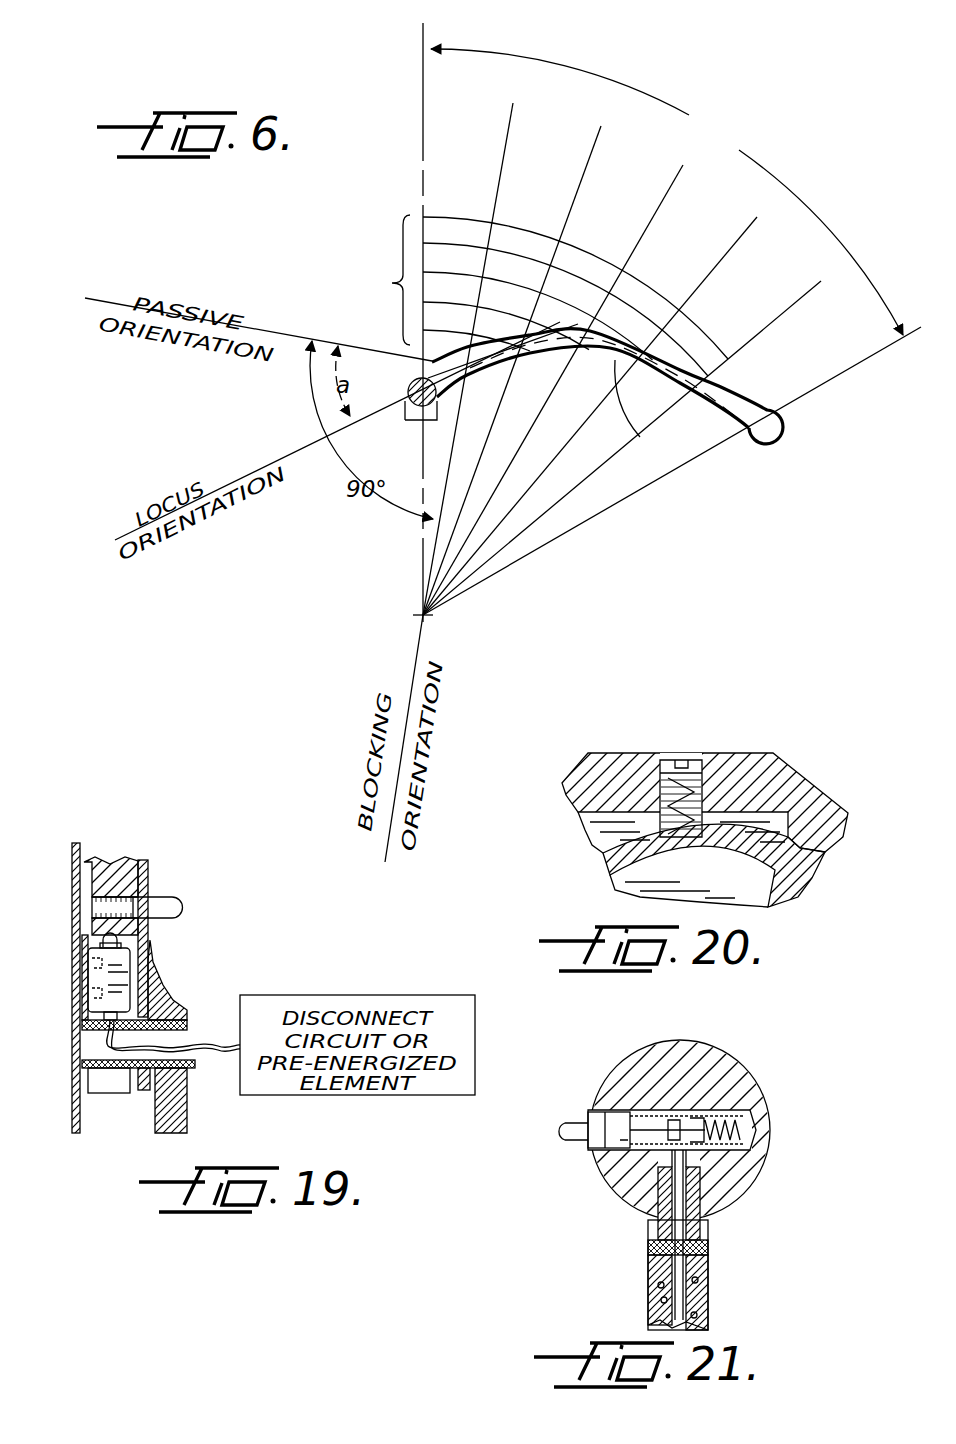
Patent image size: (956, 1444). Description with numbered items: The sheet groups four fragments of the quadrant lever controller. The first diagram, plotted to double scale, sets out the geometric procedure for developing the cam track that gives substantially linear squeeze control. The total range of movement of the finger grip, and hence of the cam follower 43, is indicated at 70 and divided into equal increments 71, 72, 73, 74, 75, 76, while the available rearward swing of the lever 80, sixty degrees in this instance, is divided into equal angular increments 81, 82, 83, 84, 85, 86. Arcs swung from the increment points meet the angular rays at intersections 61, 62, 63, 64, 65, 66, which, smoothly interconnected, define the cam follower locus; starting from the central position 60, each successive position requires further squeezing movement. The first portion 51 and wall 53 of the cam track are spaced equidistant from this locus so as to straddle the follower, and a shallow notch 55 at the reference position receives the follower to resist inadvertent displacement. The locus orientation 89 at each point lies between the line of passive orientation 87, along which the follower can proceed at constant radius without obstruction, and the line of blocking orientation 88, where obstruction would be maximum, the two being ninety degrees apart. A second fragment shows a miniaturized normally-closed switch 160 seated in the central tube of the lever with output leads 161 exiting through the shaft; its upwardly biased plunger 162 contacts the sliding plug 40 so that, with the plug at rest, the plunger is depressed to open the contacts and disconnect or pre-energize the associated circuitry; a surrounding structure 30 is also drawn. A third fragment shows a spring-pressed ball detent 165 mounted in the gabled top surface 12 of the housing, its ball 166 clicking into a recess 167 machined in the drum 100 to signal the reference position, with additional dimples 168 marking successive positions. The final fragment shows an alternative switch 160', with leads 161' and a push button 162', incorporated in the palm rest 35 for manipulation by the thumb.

In FIG. 6, the available rearward swing of the lever 80 is at (667, 192).
In FIG. 6, the angular increment 81 is at (507, 122).
In FIG. 6, the angular increment 82 is at (590, 156).
In FIG. 6, the angular increment 83 is at (664, 190).
In FIG. 6, the angular increment 84 is at (733, 238).
In FIG. 6, the angular increment 85 is at (800, 297).
In FIG. 6, the angular increment 86 is at (860, 366).
In FIG. 6, the total range of movement of the finger grip 70 is at (383, 280).
In FIG. 6, the increment point 71 is at (413, 353).
In FIG. 6, the increment point 72 is at (425, 332).
In FIG. 6, the increment point 73 is at (425, 302).
In FIG. 6, the increment point 74 is at (425, 272).
In FIG. 6, the increment point 75 is at (423, 243).
In FIG. 6, the increment point 76 is at (422, 217).
In FIG. 6, the cam track wall 53 is at (611, 335).
In FIG. 6, the first portion of the cam track 51 is at (640, 437).
In FIG. 6, the cam follower 43 is at (404, 414).
In FIG. 19, the cam follower 43 is at (182, 904).
In FIG. 6, the notch 55 is at (418, 425).
In FIG. 6, the central position 60 is at (440, 392).
In FIG. 6, the cam follower position 61 is at (470, 374).
In FIG. 6, the cam follower position 62 is at (520, 353).
In FIG. 6, the cam follower position 63 is at (577, 350).
In FIG. 6, the cam follower position 64 is at (640, 357).
In FIG. 6, the cam follower position 65 is at (704, 383).
In FIG. 6, the cam follower position 66 is at (762, 440).
In FIG. 6, the line of passive orientation 87 is at (286, 338).
In FIG. 6, the line of blocking orientation 88 is at (401, 674).
In FIG. 6, the orientation of the locus 89 is at (262, 463).
In FIG. 19, the support structure 30 is at (150, 869).
In FIG. 21, the support structure 30 is at (714, 1290).
In FIG. 19, the sliding plug 40 is at (88, 936).
In FIG. 19, the switch 160 is at (158, 983).
In FIG. 19, the output leads 161 is at (179, 1072).
In FIG. 19, the plunger type actuator 162 is at (164, 932).
In FIG. 20, the gabled top surface 12 is at (742, 755).
In FIG. 20, the ball type spring-pressed detent 165 is at (676, 763).
In FIG. 20, the ball 166 is at (634, 854).
In FIG. 20, the recess or dimple 167 is at (652, 873).
In FIG. 20, the additional dimples 168 is at (812, 860).
In FIG. 20, the drum 100 is at (800, 897).
In FIG. 21, the palm rest 35 is at (757, 1086).
In FIG. 21, the switch 160' is at (644, 1107).
In FIG. 21, the leads 161' is at (739, 1235).
In FIG. 21, the push button 162' is at (533, 1149).